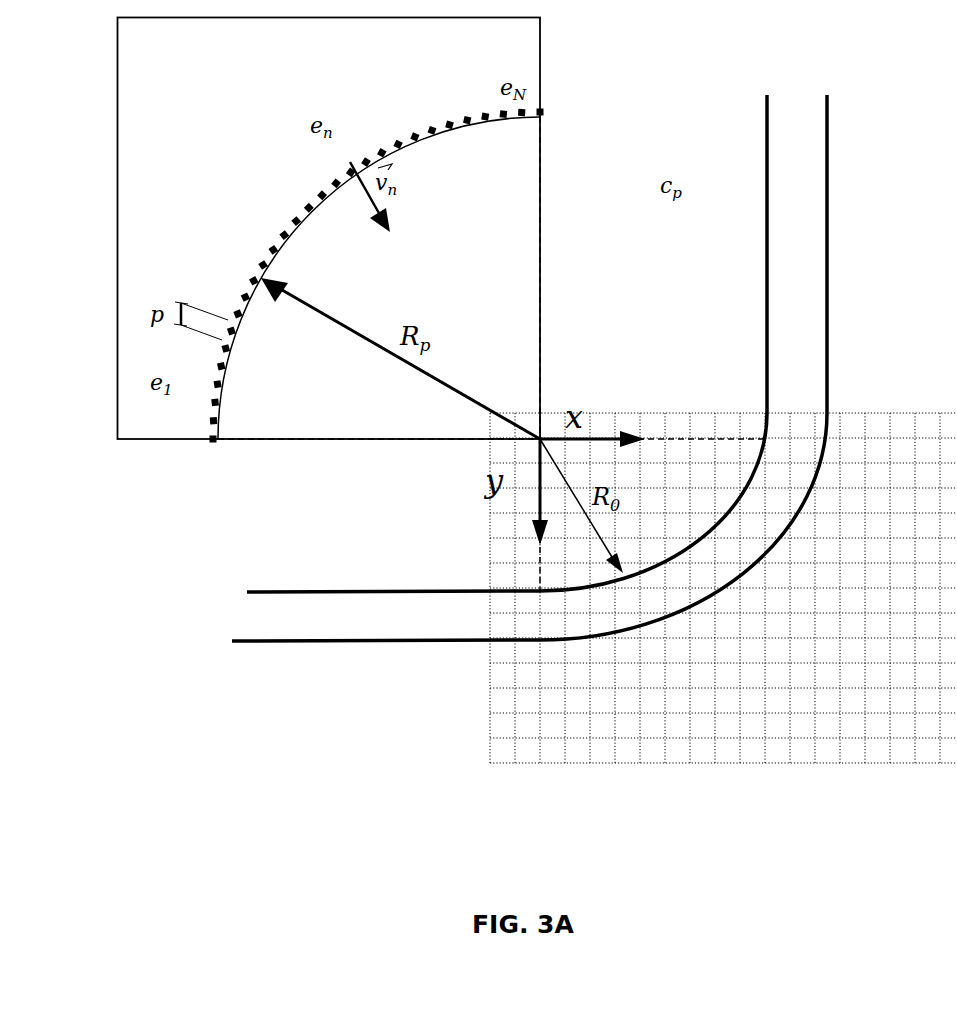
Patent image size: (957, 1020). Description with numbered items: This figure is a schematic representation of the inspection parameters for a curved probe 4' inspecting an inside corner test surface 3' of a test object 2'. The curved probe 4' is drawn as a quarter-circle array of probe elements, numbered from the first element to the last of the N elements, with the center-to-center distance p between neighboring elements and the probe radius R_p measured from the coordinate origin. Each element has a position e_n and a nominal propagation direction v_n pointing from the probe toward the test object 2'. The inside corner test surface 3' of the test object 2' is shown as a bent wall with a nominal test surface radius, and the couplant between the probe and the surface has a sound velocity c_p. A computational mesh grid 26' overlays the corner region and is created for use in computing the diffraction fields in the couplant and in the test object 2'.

The test object 2' is at (823, 254).
The inside corner test surface 3' is at (529, 527).
The curved probe 4' is at (331, 259).
The computational mesh grid 26' is at (723, 611).